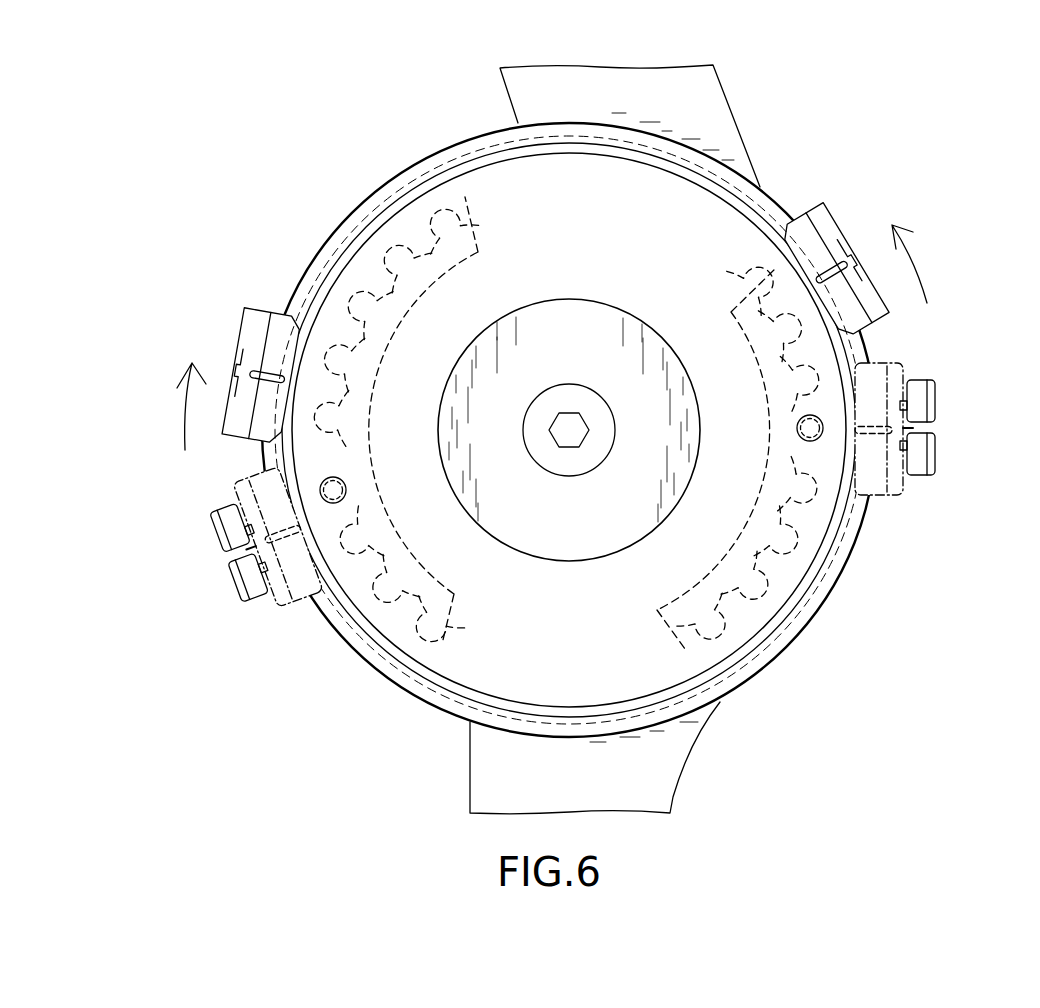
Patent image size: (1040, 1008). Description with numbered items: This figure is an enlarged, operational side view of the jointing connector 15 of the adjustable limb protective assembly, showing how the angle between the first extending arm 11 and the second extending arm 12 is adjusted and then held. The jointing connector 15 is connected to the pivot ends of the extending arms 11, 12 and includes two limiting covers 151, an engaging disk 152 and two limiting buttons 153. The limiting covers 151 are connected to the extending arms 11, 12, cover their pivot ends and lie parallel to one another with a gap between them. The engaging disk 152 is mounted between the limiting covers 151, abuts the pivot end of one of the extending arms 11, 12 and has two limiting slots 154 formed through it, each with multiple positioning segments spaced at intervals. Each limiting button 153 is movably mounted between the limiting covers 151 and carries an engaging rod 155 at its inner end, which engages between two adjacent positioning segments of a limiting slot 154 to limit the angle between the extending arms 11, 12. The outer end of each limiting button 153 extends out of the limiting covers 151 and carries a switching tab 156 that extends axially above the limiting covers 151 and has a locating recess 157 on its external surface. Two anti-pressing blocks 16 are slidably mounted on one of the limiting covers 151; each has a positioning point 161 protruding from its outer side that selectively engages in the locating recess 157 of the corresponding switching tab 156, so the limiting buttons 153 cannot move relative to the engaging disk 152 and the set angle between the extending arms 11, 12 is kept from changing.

The first extending arm 11 is at (493, 100).
The second extending arm 12 is at (457, 767).
The jointing connector 15 is at (323, 213).
The limiting cover 151 is at (361, 656).
The engaging disk 152 is at (424, 704).
The limiting button 153 is at (790, 451).
The limiting slot 154 is at (457, 221).
The engaging rod 155 is at (798, 425).
The switching tab 156 is at (930, 455).
The locating recess 157 is at (924, 428).
The anti-pressing block 16 is at (808, 200).
The positioning point 161 is at (862, 257).